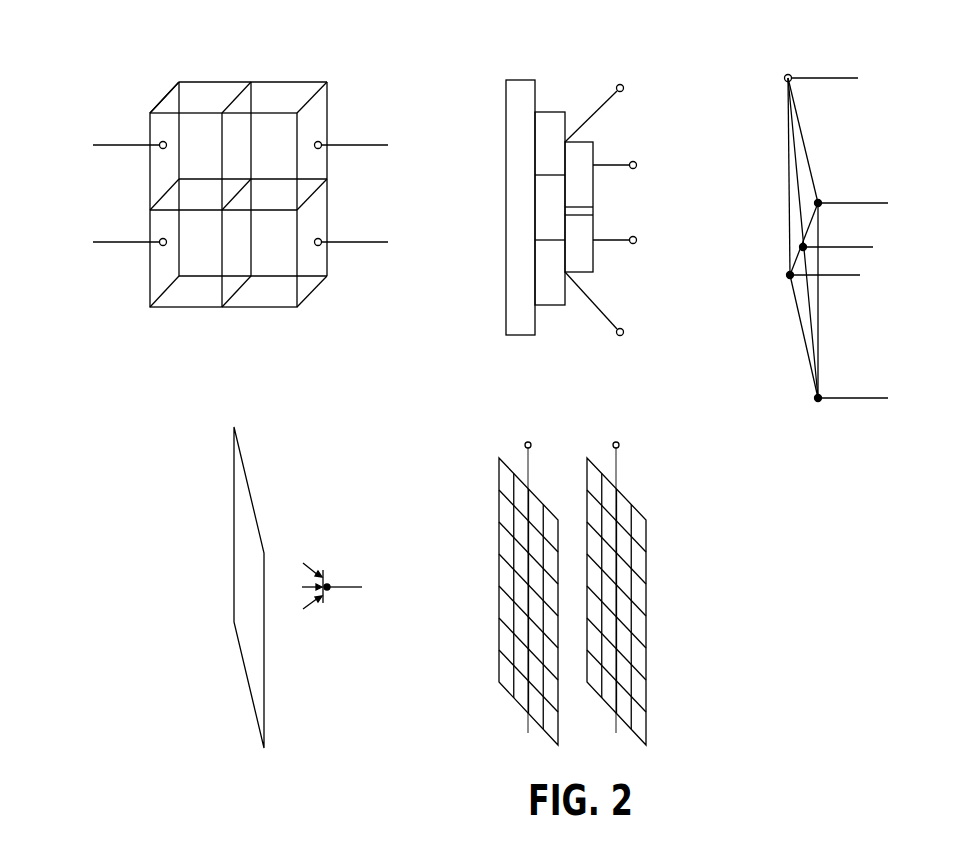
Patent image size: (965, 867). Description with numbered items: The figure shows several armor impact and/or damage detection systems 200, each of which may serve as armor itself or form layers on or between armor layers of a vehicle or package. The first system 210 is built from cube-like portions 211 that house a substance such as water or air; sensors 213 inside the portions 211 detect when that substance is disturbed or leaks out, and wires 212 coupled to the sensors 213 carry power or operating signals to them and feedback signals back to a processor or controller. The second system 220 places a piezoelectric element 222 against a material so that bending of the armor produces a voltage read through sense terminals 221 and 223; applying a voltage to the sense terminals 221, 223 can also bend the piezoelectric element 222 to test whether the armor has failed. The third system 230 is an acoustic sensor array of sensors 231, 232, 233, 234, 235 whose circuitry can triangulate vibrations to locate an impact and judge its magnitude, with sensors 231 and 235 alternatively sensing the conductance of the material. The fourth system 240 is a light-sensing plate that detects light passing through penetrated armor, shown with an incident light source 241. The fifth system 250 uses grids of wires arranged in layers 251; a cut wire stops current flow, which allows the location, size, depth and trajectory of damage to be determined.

The armor impact and/or damage detection systems 200 is at (527, 389).
The system 210 is at (238, 56).
The portions 211 is at (168, 95).
The wires 212 is at (141, 145).
The sensors 213 is at (163, 149).
The system 220 is at (546, 52).
The sense terminal 221 is at (616, 94).
The piezoelectric element 222 is at (594, 145).
The sense terminal 223 is at (633, 170).
The system 230 is at (812, 52).
The sensor 231 is at (791, 80).
The sensor 232 is at (819, 200).
The sensor 233 is at (805, 246).
The sensor 234 is at (789, 276).
The sensor 235 is at (819, 396).
The system 240 is at (225, 407).
The light source 241 is at (322, 572).
The system 250 is at (565, 404).
The layer 251 is at (517, 473).